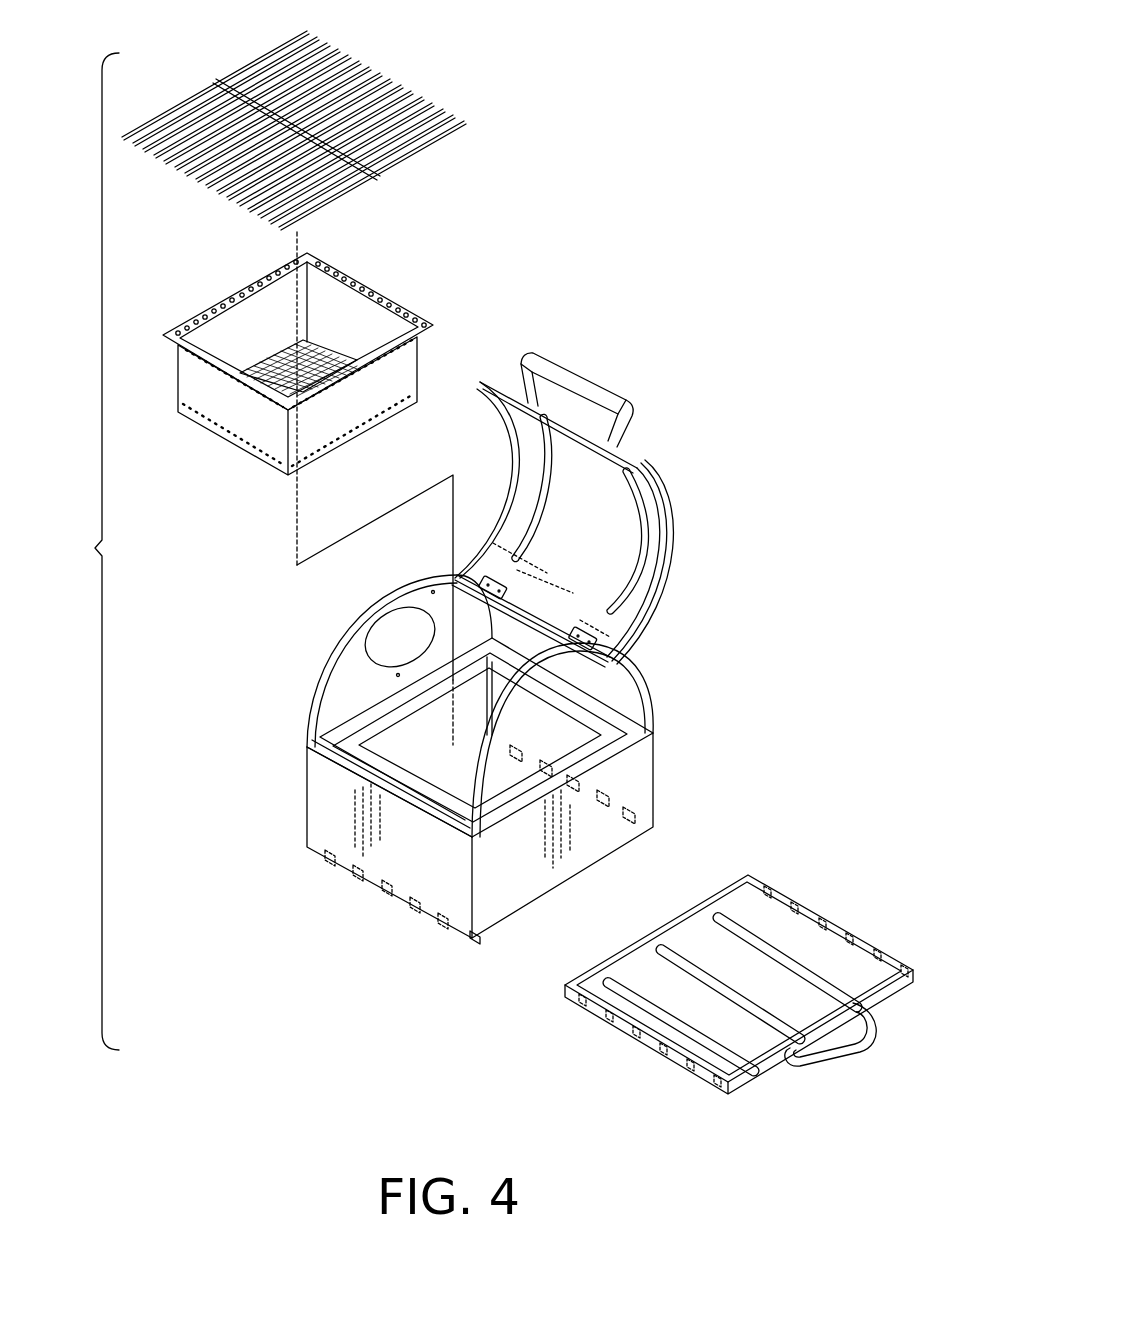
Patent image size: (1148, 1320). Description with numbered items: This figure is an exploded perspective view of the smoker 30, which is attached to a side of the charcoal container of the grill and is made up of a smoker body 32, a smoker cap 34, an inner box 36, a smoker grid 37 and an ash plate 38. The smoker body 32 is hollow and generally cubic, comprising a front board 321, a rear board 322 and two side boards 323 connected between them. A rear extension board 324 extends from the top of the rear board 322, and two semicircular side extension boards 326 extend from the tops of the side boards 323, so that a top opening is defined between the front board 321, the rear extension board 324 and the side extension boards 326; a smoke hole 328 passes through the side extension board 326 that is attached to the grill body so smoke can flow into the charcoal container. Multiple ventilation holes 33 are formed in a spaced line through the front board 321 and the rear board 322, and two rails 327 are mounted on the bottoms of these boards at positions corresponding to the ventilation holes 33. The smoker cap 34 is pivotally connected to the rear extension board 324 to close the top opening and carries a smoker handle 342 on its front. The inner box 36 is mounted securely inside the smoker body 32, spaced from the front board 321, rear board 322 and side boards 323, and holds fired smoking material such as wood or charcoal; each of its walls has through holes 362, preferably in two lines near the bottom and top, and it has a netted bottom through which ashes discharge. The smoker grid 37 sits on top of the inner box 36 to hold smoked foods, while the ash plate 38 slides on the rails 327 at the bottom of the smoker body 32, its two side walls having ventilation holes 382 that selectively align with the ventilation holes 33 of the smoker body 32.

The smoker 30 is at (730, 402).
The smoker body 32 is at (477, 755).
The front board 321 is at (330, 808).
The rear board 322 is at (603, 659).
The side boards 323 is at (580, 835).
The rear extension board 324 is at (520, 640).
The side extension boards 326 is at (598, 716).
The rails 327 is at (478, 940).
The smoke hole 328 is at (378, 650).
The ventilation holes 33 is at (380, 892).
The smoker cap 34 is at (592, 497).
The smoker handle 342 is at (585, 388).
The inner box 36 is at (334, 407).
The through holes 362 is at (260, 455).
The smoker grid 37 is at (367, 82).
The ash plate 38 is at (739, 1009).
The ventilation holes 382 is at (690, 1055).